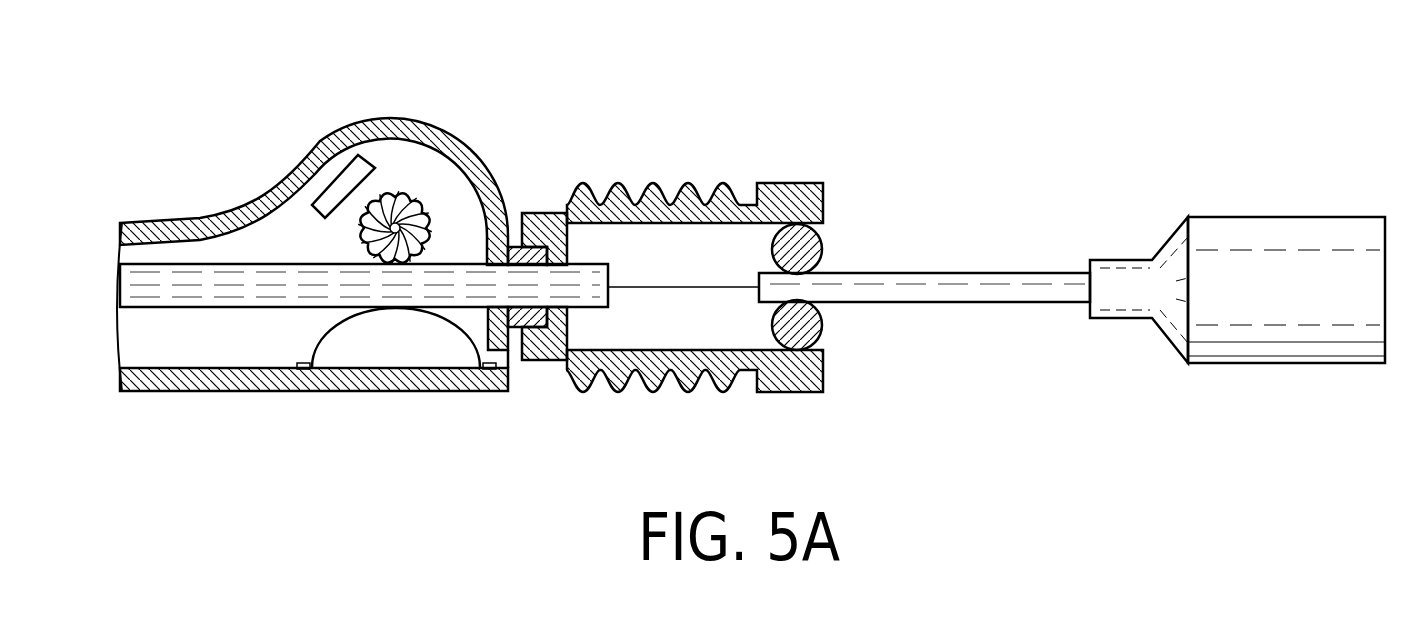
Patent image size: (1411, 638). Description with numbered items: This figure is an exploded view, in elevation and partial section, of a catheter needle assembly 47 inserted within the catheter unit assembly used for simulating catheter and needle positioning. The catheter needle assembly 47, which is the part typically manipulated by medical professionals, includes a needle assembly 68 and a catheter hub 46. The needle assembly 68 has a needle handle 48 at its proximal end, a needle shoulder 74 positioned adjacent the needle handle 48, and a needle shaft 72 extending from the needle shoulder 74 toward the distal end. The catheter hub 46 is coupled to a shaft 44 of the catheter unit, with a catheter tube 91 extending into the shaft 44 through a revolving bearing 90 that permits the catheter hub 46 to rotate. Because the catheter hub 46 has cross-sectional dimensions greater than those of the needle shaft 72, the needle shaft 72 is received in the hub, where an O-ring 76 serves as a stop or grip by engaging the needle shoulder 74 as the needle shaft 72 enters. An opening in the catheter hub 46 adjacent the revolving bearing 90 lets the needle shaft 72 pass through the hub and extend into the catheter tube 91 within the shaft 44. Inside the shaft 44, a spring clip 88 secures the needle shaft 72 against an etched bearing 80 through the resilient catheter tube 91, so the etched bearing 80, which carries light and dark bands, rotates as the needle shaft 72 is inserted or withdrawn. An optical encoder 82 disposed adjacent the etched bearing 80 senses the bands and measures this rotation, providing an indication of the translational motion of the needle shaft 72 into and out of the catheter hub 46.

The shaft 44 is at (287, 392).
The catheter tube 91 is at (150, 307).
The optical encoder 82 is at (358, 157).
The etched bearing 80 is at (412, 200).
The spring clip 88 is at (330, 343).
The revolving bearing 90 is at (540, 360).
The catheter hub 46 is at (688, 392).
The catheter needle assembly 47 is at (715, 130).
The O-ring 76 is at (824, 246).
The needle shaft 72 is at (950, 303).
The needle shoulder 74 is at (1122, 318).
The needle handle 48 is at (1290, 363).
The needle assembly 68 is at (1285, 172).